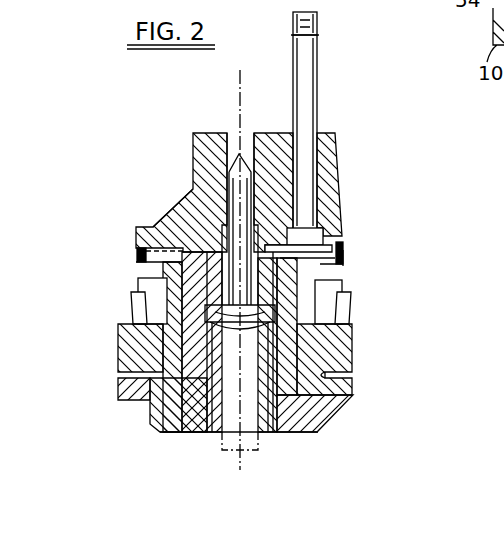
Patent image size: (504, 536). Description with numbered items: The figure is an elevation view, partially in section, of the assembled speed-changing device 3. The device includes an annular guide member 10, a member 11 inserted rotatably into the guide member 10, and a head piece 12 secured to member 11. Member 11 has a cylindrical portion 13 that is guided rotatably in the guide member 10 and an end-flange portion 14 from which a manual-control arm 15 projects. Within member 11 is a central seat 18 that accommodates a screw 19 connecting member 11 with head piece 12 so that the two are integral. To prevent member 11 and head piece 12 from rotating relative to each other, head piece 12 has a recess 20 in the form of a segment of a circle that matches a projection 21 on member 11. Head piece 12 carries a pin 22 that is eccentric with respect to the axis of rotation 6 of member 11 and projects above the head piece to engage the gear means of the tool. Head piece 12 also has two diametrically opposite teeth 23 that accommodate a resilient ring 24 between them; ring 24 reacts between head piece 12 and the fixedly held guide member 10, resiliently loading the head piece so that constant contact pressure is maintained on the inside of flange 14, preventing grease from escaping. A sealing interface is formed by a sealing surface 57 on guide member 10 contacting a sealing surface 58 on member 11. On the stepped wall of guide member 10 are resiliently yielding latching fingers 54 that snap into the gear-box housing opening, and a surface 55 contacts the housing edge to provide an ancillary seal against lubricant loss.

The valve assembly 3 is at (416, 288).
The axis of rotation 6 is at (241, 94).
The annular guide member 10 is at (135, 350).
The member 11 is at (160, 428).
The head piece 12 is at (203, 145).
The cylindrical portion 13 is at (195, 270).
The end-flange portion 14 is at (150, 410).
The manual-control arm 15 is at (258, 450).
The central seat 18 is at (200, 405).
The screw 19 is at (238, 246).
The recess 20 is at (318, 238).
The projection 21 is at (188, 200).
The pin 22 is at (306, 72).
The teeth 23 is at (140, 250).
The resilient ring 24 is at (343, 251).
The latching fingers 54 is at (140, 298).
The surface 55 is at (138, 318).
The sealing surface 57 is at (350, 400).
The sealing surface 58 is at (322, 418).